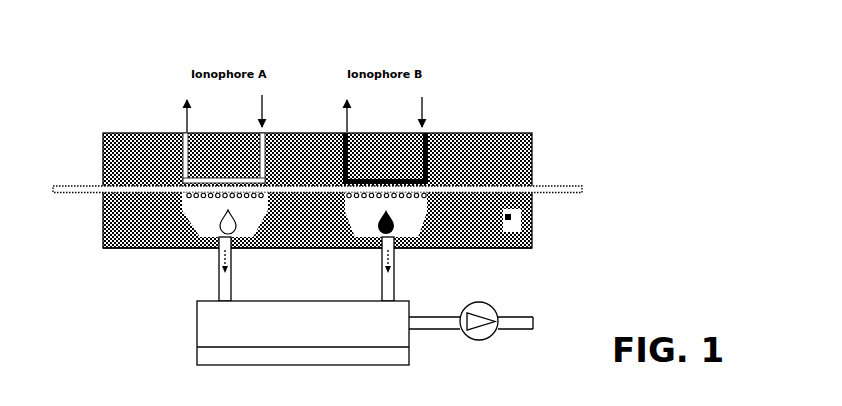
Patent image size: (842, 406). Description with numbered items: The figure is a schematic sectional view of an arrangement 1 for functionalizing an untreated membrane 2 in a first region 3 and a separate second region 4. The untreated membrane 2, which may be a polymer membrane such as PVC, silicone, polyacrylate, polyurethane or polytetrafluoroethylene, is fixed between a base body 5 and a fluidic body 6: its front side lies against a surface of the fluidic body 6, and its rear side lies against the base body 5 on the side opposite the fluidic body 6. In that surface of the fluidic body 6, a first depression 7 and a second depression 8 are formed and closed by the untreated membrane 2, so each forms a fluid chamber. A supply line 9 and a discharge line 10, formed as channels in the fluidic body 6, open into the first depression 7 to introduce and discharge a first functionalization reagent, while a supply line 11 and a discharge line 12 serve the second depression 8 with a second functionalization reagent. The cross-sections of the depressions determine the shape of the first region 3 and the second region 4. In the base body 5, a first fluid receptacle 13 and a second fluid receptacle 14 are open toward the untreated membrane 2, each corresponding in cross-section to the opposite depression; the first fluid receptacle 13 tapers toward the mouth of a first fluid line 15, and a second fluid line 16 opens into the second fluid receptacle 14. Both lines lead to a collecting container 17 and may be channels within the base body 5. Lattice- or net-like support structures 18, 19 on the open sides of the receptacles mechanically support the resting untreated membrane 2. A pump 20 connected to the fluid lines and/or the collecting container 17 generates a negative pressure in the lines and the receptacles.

The arrangement 1 is at (570, 75).
The untreated membrane 2 is at (56, 186).
The first region 3 is at (183, 195).
The second region 4 is at (426, 188).
The base body 5 is at (504, 212).
The fluidic body 6 is at (432, 188).
The first depression 7 is at (222, 178).
The second depression 8 is at (381, 178).
The supply line 9 is at (264, 148).
The discharge line 10 is at (184, 143).
The supply line 11 is at (430, 134).
The discharge line 12 is at (345, 134).
The first fluid receptacle 13 is at (196, 232).
The second fluid receptacle 14 is at (410, 218).
The first fluid line 15 is at (218, 243).
The second fluid line 16 is at (403, 246).
The collecting container 17 is at (312, 353).
The support structure 18 is at (292, 137).
The support structure 19 is at (428, 182).
The pump 20 is at (497, 335).